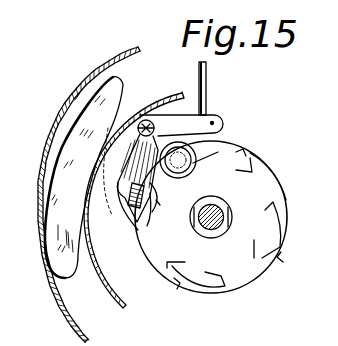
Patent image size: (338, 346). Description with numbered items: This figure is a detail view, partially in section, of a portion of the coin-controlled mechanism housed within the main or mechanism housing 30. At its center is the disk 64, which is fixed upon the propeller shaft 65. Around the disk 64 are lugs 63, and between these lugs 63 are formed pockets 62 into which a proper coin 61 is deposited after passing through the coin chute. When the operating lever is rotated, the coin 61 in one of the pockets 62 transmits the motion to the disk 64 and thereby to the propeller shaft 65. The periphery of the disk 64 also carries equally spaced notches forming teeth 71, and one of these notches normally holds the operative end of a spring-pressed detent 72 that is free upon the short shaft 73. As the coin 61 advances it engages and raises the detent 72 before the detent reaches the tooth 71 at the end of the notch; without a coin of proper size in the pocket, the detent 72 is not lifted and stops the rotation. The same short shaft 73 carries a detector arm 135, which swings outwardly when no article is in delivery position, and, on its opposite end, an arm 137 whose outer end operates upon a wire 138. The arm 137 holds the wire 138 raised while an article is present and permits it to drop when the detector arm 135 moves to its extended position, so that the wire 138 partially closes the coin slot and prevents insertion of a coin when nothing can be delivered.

The main or mechanism housing 30 is at (60, 313).
The spring-pressed detent 72 is at (120, 183).
The short shaft 73 is at (144, 119).
The detector arm 135 is at (128, 203).
The arm 137 is at (213, 118).
The wire 138 is at (206, 76).
The coin 61 is at (193, 167).
The pockets 62 is at (284, 174).
The lugs 63 is at (223, 163).
The disk 64 is at (257, 158).
The teeth 71 is at (156, 199).
The propeller shaft 65 is at (214, 225).